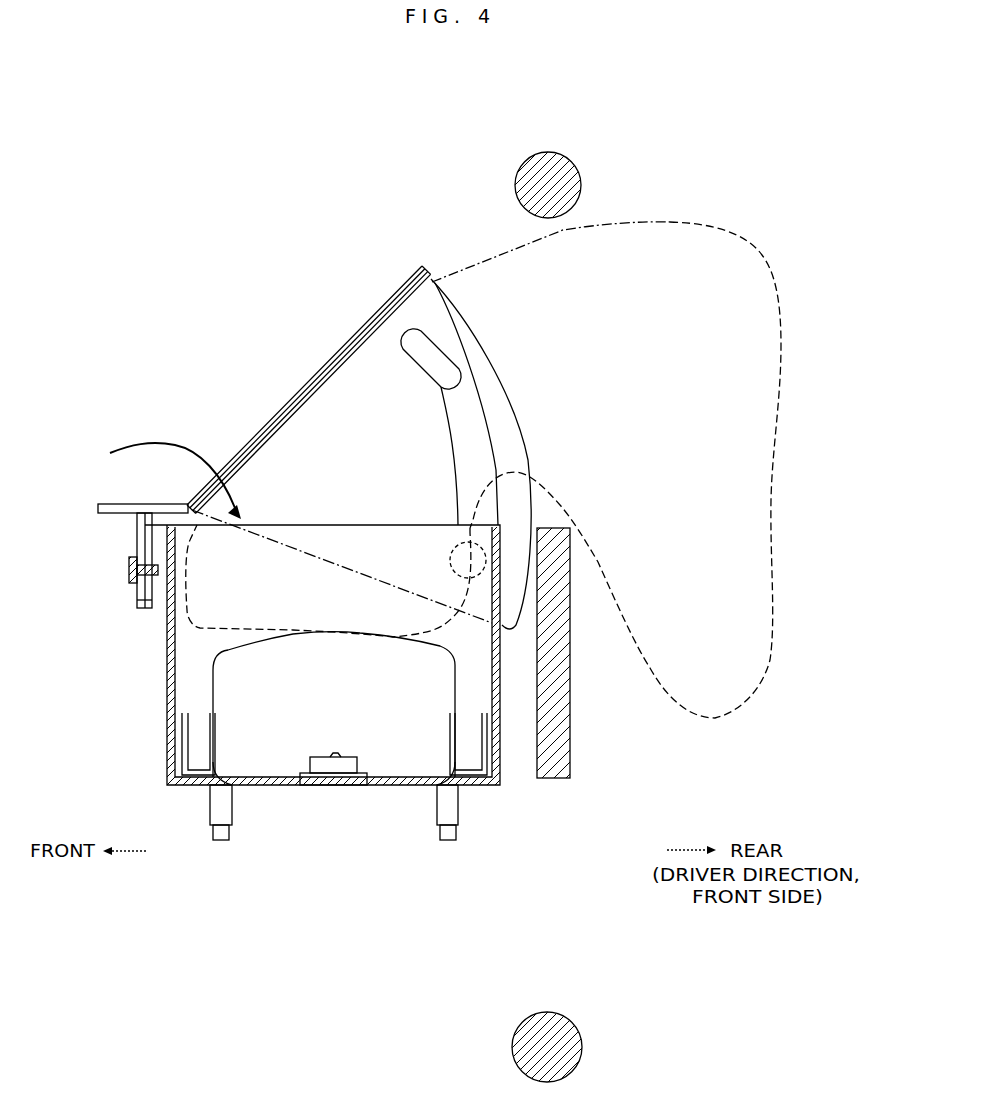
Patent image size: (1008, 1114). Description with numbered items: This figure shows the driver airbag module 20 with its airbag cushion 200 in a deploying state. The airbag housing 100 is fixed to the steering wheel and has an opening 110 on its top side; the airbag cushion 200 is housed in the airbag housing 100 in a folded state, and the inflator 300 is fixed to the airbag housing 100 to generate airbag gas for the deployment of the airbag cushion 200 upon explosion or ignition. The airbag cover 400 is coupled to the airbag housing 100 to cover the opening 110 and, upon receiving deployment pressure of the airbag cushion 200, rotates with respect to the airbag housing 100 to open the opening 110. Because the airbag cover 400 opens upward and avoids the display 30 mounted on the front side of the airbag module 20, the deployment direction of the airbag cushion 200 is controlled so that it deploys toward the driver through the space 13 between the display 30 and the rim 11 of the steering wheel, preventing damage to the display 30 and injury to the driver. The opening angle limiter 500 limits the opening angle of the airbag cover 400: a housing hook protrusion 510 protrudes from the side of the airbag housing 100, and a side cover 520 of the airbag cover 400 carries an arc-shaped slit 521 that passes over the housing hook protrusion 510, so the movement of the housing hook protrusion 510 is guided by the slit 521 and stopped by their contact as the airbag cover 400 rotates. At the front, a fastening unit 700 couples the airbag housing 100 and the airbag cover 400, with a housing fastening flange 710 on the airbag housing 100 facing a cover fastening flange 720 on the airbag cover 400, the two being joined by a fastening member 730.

The rim 11 is at (552, 152).
The space 13 is at (563, 234).
The airbag module 20 is at (383, 272).
The display 30 is at (570, 748).
The airbag housing 100 is at (170, 740).
The opening 110 is at (155, 481).
The airbag cushion 200 is at (735, 237).
The inflator 300 is at (283, 763).
The airbag cover 400 is at (343, 343).
The opening angle limiter 500 is at (526, 411).
The housing hook protrusion 510 is at (460, 547).
The side cover 520 is at (253, 480).
The slit 521 is at (444, 385).
The fastening unit 700 is at (128, 601).
The housing fastening flange 710 is at (147, 609).
The cover fastening flange 720 is at (137, 535).
The fastening member 730 is at (129, 570).